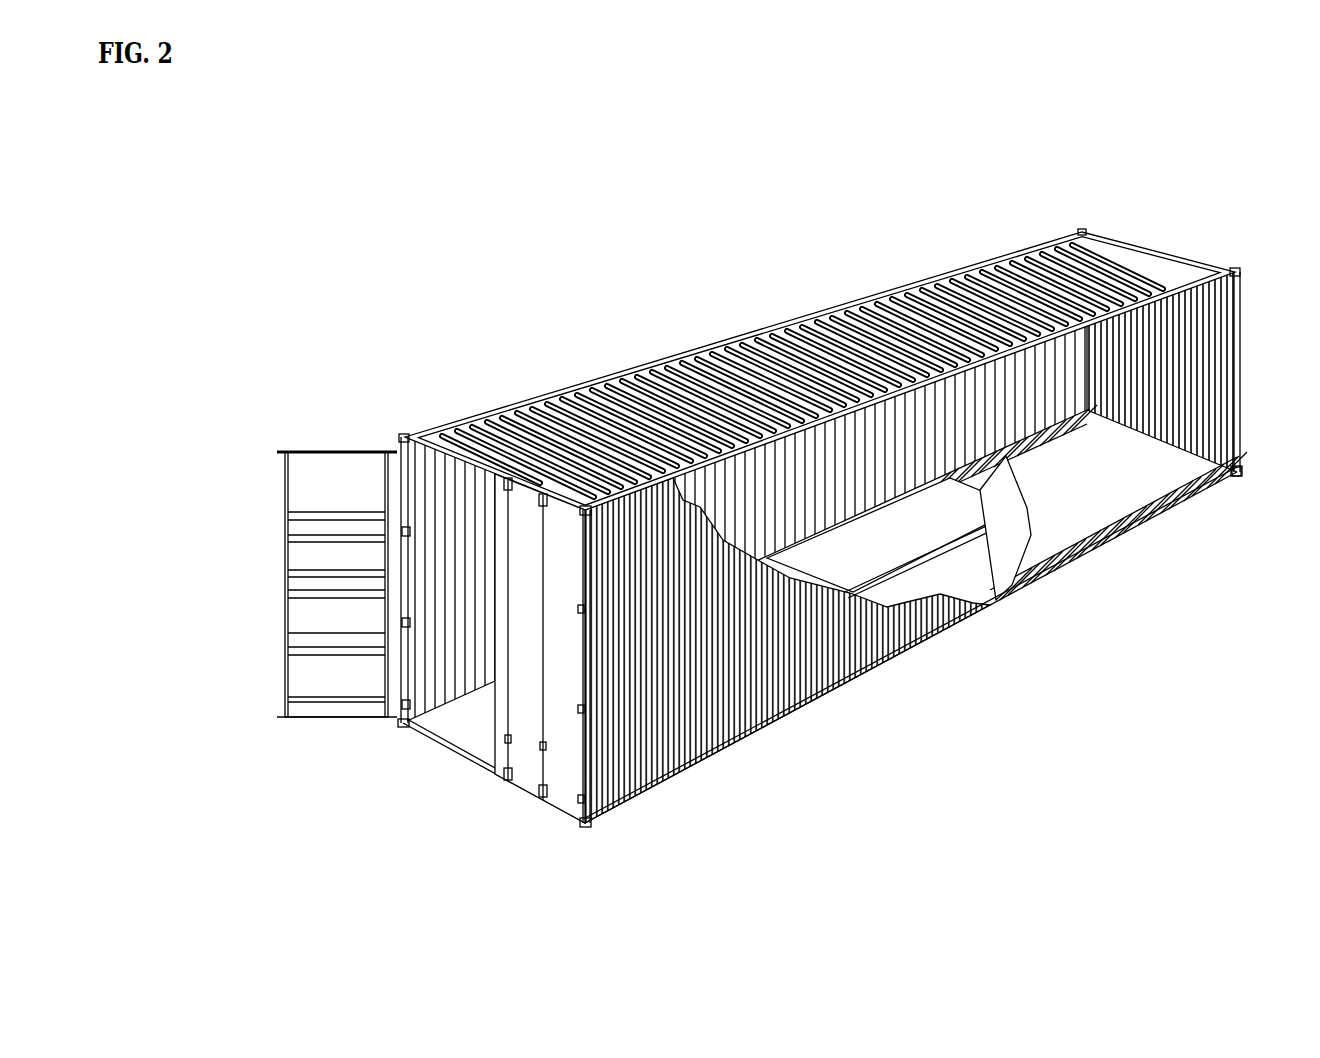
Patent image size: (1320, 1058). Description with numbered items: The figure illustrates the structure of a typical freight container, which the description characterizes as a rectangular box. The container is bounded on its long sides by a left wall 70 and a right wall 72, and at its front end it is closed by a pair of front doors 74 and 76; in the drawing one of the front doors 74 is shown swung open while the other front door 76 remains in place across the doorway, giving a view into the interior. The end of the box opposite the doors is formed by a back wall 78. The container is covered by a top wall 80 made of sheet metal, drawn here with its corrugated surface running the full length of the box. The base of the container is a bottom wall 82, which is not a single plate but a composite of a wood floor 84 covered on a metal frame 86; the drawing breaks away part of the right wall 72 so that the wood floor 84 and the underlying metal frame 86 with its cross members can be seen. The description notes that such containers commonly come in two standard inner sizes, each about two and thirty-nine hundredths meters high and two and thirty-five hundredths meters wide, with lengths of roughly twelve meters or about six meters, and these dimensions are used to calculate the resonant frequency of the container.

The left wall 70 is at (457, 677).
The right wall 72 is at (668, 762).
The front door 74 is at (302, 713).
The front door 76 is at (528, 777).
The back wall 78 is at (1242, 476).
The top wall 80 is at (670, 380).
The bottom wall 82 is at (902, 543).
The wood floor 84 is at (1002, 468).
The metal frame 86 is at (1167, 493).